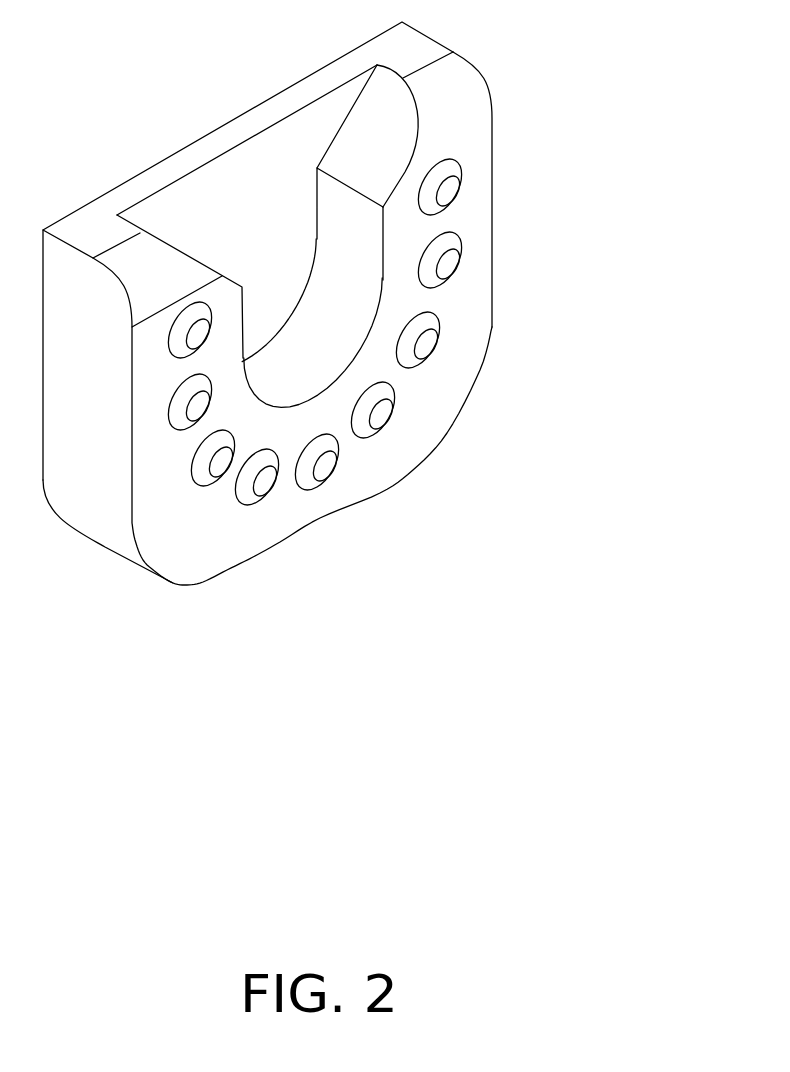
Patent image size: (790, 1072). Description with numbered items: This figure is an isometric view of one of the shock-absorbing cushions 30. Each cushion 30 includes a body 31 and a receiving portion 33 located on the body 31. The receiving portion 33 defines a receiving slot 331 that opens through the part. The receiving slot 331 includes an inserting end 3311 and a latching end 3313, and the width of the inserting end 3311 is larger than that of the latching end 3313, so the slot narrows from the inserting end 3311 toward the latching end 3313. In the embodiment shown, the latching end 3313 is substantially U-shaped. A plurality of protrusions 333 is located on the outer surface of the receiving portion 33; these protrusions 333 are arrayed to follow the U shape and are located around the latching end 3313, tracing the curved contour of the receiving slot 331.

The cushion 30 is at (355, 327).
The body 31 is at (165, 175).
The receiving portion 33 is at (354, 403).
The receiving slot 331 is at (392, 236).
The inserting end 3311 is at (382, 117).
The latching end 3313 is at (347, 285).
The protrusions 333 is at (368, 403).